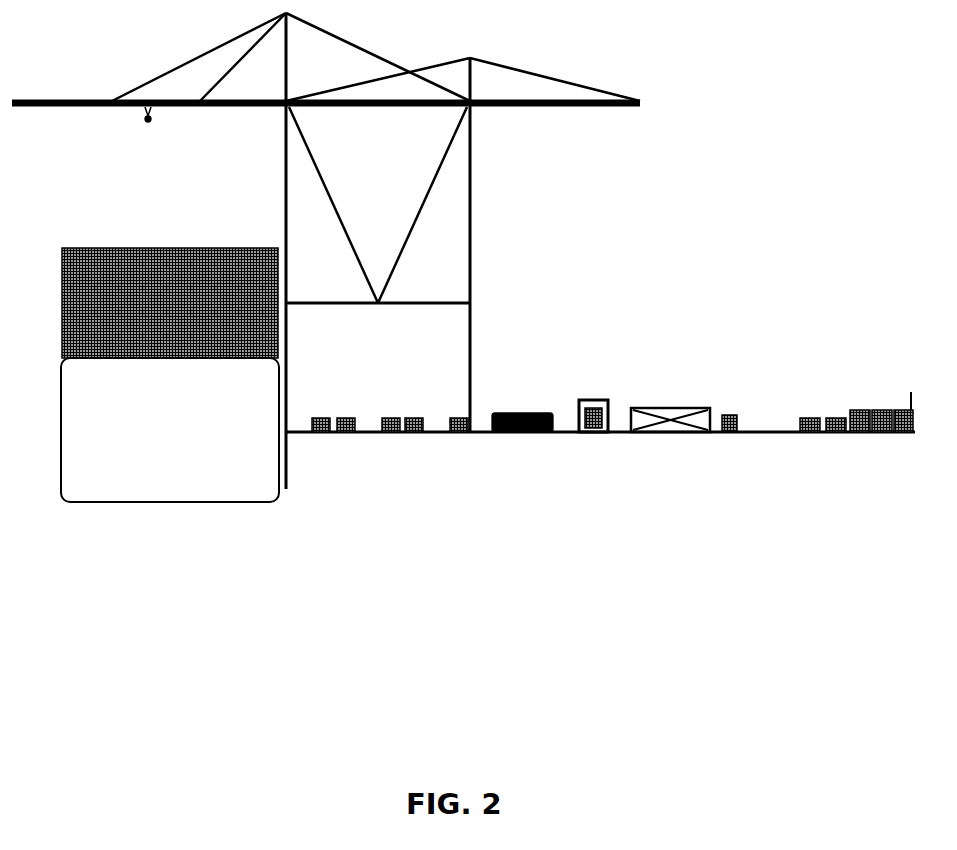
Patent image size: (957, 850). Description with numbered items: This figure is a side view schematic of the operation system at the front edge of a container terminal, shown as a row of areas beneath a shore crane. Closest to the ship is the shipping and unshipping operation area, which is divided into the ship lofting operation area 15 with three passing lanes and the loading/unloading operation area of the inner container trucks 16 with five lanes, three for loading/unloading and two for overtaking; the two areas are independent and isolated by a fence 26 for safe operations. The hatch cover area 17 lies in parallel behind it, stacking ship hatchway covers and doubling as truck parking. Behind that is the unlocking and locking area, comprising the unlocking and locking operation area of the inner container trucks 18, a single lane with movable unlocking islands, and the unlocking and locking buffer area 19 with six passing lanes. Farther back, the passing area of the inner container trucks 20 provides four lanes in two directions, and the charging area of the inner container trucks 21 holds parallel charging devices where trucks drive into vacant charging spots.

The ship lofting operation area 15 is at (331, 415).
The fence 26 is at (359, 430).
The loading/unloading operation area of the inner container trucks 16 is at (424, 415).
The hatch cover area 17 is at (522, 412).
The unlocking and locking operation area of the inner container trucks 18 is at (593, 400).
The unlocking and locking buffer area 19 is at (685, 411).
The passing area of the inner container trucks 20 is at (878, 410).
The charging area of the inner container trucks 21 is at (900, 410).